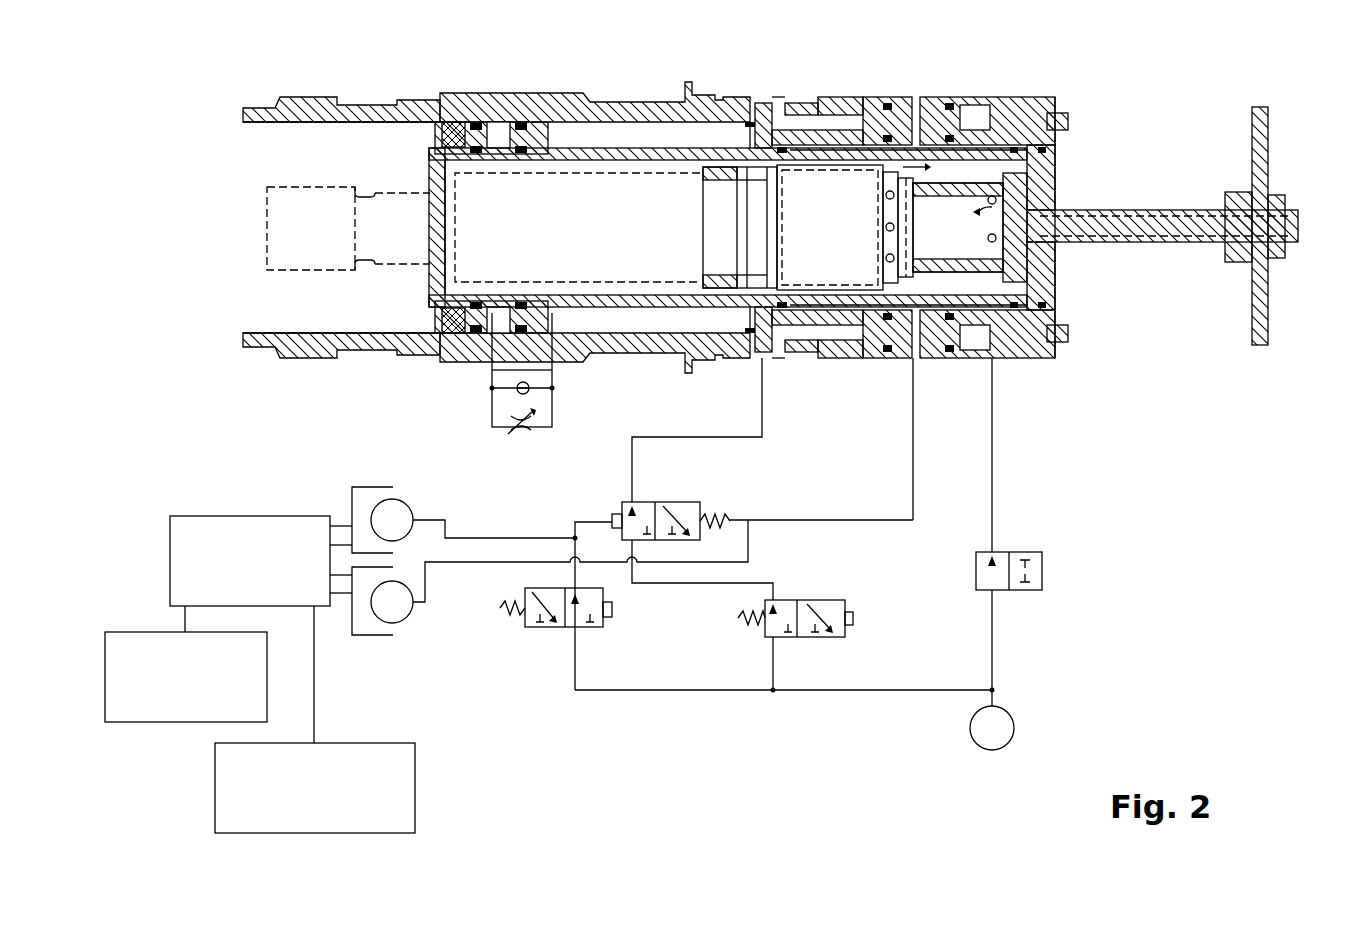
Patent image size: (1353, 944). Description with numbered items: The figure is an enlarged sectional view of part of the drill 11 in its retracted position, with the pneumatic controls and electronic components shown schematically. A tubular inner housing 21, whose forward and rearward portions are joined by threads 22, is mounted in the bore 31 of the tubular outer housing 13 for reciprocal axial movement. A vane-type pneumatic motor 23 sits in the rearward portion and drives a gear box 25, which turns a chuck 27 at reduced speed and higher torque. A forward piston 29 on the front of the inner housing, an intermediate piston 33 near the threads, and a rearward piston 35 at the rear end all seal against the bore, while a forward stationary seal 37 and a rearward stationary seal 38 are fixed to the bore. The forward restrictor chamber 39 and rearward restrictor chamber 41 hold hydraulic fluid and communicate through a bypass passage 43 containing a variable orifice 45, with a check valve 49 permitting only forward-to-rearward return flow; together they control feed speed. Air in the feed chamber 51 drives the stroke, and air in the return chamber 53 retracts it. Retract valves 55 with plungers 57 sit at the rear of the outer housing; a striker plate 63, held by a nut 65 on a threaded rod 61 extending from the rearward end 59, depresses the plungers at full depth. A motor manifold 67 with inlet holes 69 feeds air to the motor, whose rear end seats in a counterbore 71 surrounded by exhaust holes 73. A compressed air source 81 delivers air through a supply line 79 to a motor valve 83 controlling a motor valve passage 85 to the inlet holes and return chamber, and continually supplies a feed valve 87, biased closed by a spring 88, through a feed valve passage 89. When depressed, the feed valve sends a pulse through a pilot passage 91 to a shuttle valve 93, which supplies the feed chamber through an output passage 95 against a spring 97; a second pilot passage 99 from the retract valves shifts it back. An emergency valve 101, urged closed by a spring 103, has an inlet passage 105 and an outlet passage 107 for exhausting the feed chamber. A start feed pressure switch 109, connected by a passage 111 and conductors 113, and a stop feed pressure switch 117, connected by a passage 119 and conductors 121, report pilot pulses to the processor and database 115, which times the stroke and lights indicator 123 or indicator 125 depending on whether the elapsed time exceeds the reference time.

The drill 11 is at (1126, 86).
The outer housing 13 is at (325, 100).
The inner housing 21 is at (638, 150).
The threads 22 is at (723, 162).
The pneumatic motor 23 is at (818, 208).
The gear box 25 is at (610, 214).
The chuck 27 is at (320, 272).
The forward piston 29 is at (440, 127).
The bore 31 is at (313, 125).
The intermediate piston 33 is at (727, 325).
The rearward piston 35 is at (1013, 150).
The forward stationary seal 37 is at (528, 142).
The rearward stationary seal 38 is at (780, 148).
The forward restrictor chamber 39 is at (497, 118).
The rearward restrictor chamber 41 is at (662, 324).
The bypass passage 43 is at (552, 410).
The variable orifice 45 is at (518, 436).
The check valve 49 is at (492, 388).
The feed chamber 51 is at (802, 330).
The return chamber 53 is at (817, 305).
The retract valve 55 is at (928, 358).
The plunger 57 is at (1062, 340).
The rearward end 59 is at (1056, 150).
The threaded rod 61 is at (1130, 250).
The striker plate 63 is at (1250, 130).
The nut 65 is at (1273, 195).
The motor manifold 67 is at (940, 178).
The inlet holes 69 is at (992, 243).
The counterbore 71 is at (893, 268).
The exhaust holes 73 is at (884, 228).
The supply line 79 is at (993, 650).
The compressed air source 81 is at (1013, 722).
The motor valve 83 is at (1043, 558).
The motor valve passage 85 is at (993, 522).
The feed valve 87 is at (548, 628).
The spring 88 is at (508, 610).
The feed valve passage 89 is at (700, 690).
The pilot passage 91 is at (576, 528).
The shuttle valve 93 is at (645, 500).
The output passage 95 is at (632, 470).
The spring 97 is at (716, 518).
The second pilot passage 99 is at (913, 478).
The emergency valve 101 is at (835, 600).
The spring 103 is at (745, 622).
The inlet passage 105 is at (775, 672).
The outlet passage 107 is at (770, 583).
The start feed pressure switch 109 is at (412, 508).
The passage 111 is at (456, 530).
The conductors 113 is at (375, 487).
The processor and database 115 is at (280, 516).
The stop feed pressure switch 117 is at (403, 622).
The passage 119 is at (505, 568).
The conductors 121 is at (365, 635).
The indicator 123 is at (180, 722).
The indicator 125 is at (415, 800).